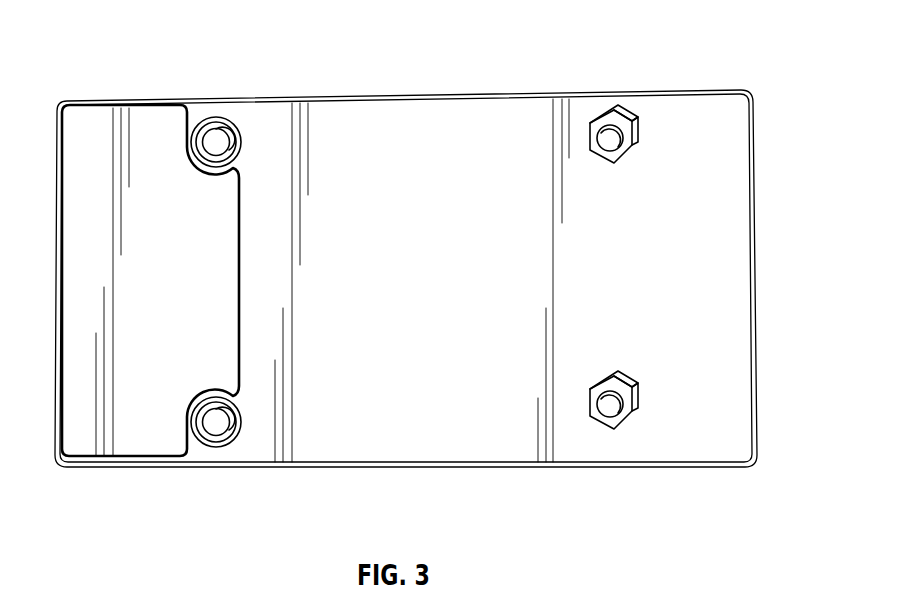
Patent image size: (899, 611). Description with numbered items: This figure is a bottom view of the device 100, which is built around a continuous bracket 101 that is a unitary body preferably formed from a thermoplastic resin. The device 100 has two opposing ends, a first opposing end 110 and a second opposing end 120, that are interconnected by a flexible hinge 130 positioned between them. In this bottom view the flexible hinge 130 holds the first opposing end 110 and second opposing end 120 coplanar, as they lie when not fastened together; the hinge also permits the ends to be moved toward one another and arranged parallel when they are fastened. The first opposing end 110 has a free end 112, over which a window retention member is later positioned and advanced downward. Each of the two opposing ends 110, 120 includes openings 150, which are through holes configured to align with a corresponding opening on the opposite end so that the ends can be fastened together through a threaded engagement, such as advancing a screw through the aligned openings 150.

The device 100 is at (98, 48).
The continuous bracket 101 is at (339, 128).
The first opposing end 110 is at (738, 242).
The free end 112 is at (755, 300).
The second opposing end 120 is at (135, 440).
The flexible hinge 130 is at (450, 128).
The openings 150 is at (220, 138).